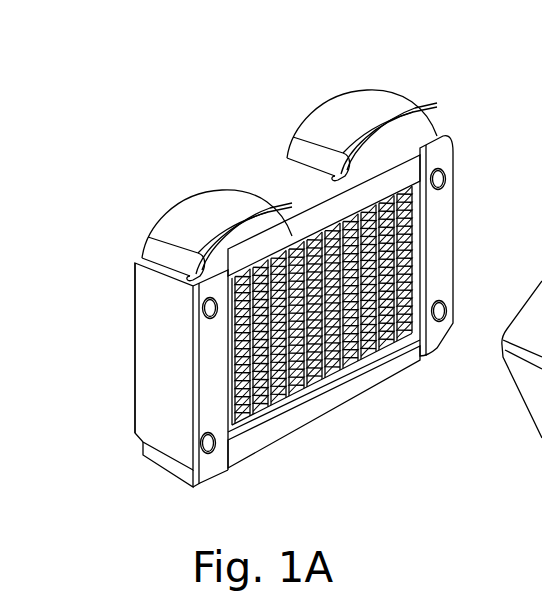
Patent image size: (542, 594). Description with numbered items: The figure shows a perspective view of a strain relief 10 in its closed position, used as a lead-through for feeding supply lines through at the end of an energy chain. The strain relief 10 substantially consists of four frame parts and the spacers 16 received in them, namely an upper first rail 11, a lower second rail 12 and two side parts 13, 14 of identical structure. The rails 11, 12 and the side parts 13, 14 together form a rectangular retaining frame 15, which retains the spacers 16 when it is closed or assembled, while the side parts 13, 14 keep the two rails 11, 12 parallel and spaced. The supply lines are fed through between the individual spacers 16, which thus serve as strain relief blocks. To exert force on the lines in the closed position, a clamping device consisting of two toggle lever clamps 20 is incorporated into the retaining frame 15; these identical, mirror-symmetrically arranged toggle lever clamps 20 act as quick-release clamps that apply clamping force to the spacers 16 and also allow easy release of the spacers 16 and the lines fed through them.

The strain relief 10 is at (292, 288).
The upper first rail 11 is at (273, 180).
The lower second rail 12 is at (258, 443).
The side part 13 is at (160, 382).
The side part 14 is at (437, 220).
The retaining frame 15 is at (128, 334).
The spacer 16 is at (377, 347).
The toggle lever clamp 20 is at (182, 201).